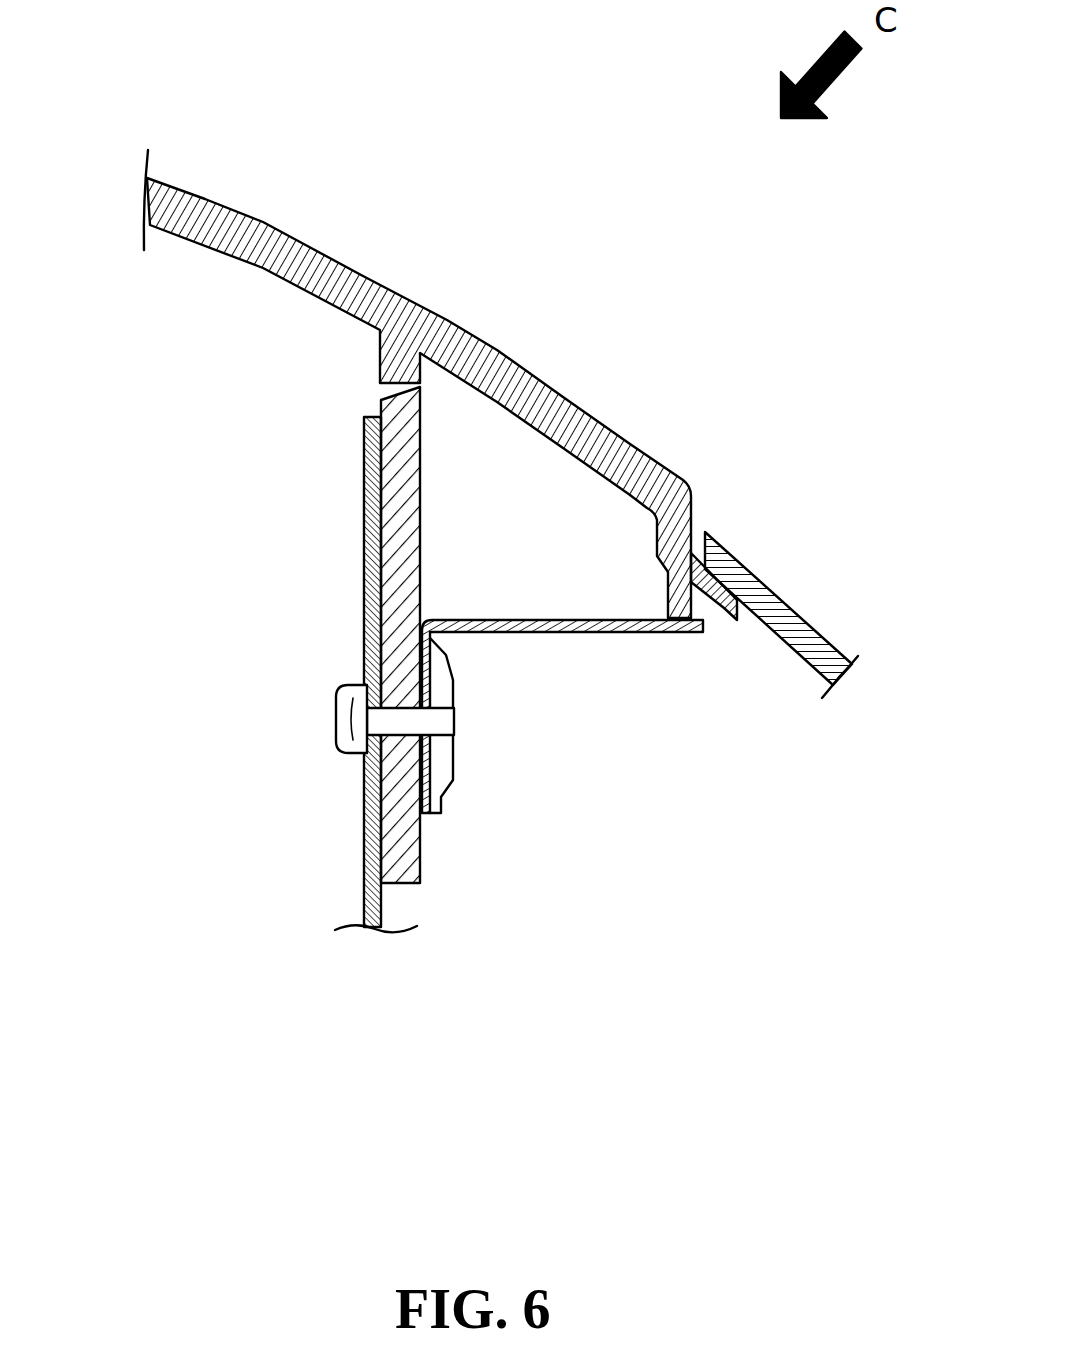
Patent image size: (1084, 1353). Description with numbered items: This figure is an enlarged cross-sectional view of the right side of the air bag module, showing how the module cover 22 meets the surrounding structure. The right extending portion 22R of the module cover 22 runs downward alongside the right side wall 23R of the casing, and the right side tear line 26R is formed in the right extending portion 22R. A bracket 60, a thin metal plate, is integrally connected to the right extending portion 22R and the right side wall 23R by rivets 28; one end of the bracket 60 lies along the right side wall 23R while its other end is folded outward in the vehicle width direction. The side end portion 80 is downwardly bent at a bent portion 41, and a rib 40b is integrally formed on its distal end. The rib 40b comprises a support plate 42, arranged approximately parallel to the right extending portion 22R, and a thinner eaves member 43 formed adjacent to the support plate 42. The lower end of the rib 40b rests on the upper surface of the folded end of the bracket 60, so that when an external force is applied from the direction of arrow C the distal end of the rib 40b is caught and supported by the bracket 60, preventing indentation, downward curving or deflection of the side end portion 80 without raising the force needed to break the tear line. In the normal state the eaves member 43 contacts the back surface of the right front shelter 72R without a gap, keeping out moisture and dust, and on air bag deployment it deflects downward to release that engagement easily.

The module cover 22 is at (254, 222).
The right extending portion 22R is at (421, 850).
The right side wall 23R is at (372, 598).
The right side tear line 26R is at (360, 384).
The rivets 28 is at (447, 760).
The rib 40b is at (620, 589).
The bent portion 41 is at (688, 485).
The support plate 42 is at (672, 596).
The eaves member 43 is at (728, 612).
The bracket 60 is at (537, 634).
The right front shelter 72R is at (790, 614).
The side end portion 80 is at (677, 400).